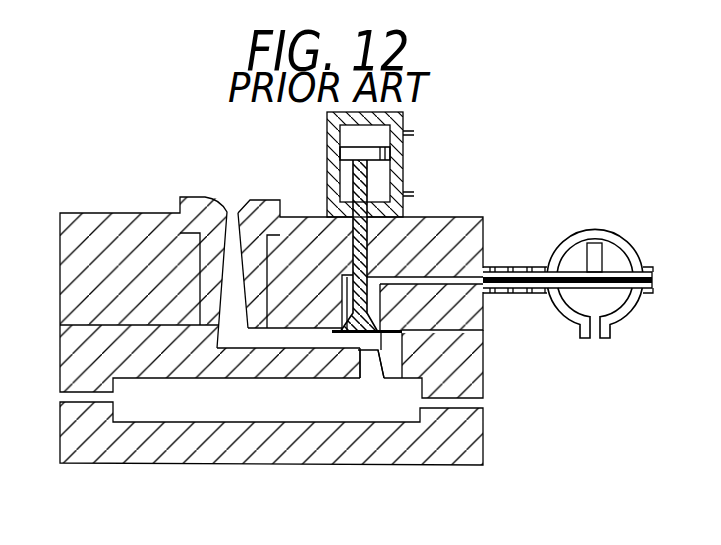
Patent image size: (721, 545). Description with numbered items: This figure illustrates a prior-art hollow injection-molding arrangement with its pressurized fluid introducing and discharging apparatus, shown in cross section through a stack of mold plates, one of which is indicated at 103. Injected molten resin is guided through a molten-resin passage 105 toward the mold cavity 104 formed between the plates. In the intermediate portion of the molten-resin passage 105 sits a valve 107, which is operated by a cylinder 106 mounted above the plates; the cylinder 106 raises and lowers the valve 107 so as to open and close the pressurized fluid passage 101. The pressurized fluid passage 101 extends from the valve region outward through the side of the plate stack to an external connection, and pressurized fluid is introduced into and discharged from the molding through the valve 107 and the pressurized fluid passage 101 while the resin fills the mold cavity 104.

The pressurized fluid passage 101 is at (380, 300).
The upper mold plate (hot runner manifold) 103 is at (448, 216).
The mold cavity 104 is at (170, 405).
The molten-resin passage 105 is at (310, 340).
The cylinder 106 is at (327, 140).
The valve 107 is at (365, 336).